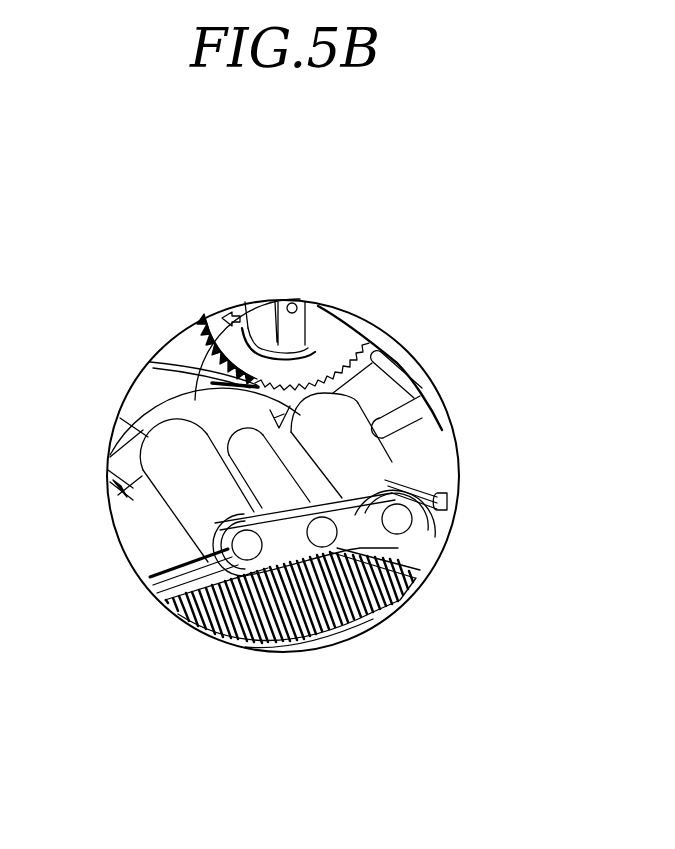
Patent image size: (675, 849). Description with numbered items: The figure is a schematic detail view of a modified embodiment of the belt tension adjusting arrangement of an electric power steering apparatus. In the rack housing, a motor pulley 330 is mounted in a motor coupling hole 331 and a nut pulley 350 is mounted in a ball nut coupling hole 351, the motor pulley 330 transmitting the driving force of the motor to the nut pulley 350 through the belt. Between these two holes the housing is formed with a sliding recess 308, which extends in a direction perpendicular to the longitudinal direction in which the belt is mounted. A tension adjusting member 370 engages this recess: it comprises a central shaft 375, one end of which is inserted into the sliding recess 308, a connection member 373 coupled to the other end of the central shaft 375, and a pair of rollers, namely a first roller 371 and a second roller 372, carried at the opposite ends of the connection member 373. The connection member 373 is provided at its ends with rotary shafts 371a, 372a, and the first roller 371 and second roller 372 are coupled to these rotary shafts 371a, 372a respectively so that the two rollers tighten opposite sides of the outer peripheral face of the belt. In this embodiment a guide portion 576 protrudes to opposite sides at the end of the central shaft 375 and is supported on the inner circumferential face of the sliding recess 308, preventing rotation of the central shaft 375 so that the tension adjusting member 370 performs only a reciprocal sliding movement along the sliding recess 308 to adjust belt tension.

The sliding recess 308 is at (155, 362).
The motor pulley 330 is at (358, 343).
The motor coupling hole 331 is at (410, 373).
The nut pulley 350 is at (343, 604).
The ball nut coupling hole 351 is at (437, 512).
The tension adjusting member 370 is at (156, 520).
The first roller 371 is at (203, 508).
The rotary shaft 371a is at (305, 590).
The second roller 372 is at (392, 494).
The rotary shaft 372a is at (398, 519).
The connection member 373 is at (357, 473).
The central shaft 375 is at (322, 532).
The guide portion 576 is at (290, 428).